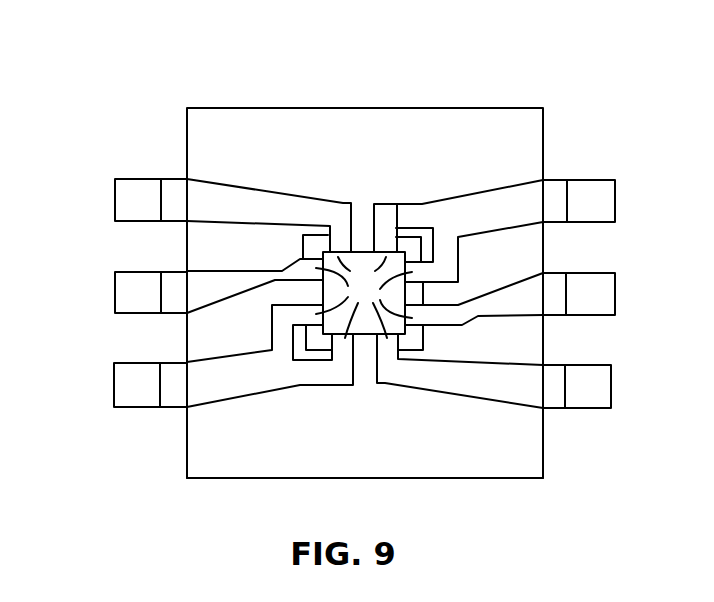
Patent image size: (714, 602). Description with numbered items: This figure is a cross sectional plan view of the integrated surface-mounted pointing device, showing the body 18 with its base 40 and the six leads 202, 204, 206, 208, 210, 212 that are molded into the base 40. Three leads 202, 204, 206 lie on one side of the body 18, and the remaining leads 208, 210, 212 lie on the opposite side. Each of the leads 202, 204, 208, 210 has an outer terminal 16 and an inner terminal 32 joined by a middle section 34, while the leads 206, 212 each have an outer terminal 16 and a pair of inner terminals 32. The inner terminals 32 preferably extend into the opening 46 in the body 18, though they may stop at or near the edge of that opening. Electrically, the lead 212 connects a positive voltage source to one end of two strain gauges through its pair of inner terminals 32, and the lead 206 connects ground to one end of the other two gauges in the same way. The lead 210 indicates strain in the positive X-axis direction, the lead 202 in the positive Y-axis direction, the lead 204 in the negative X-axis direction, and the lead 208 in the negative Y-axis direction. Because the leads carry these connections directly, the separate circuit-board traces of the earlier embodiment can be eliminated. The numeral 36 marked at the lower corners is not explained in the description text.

The outer terminal 16 is at (137, 197).
The body 18 is at (300, 108).
The inner terminal 32 is at (364, 295).
The middle section 34 is at (232, 200).
The substrate edge 36 is at (187, 464).
The base 40 is at (503, 120).
The opening 46 is at (360, 236).
The lead 202 is at (273, 192).
The lead 204 is at (212, 268).
The lead 206 is at (272, 387).
The lead 208 is at (458, 395).
The lead 210 is at (503, 290).
The lead 212 is at (495, 190).